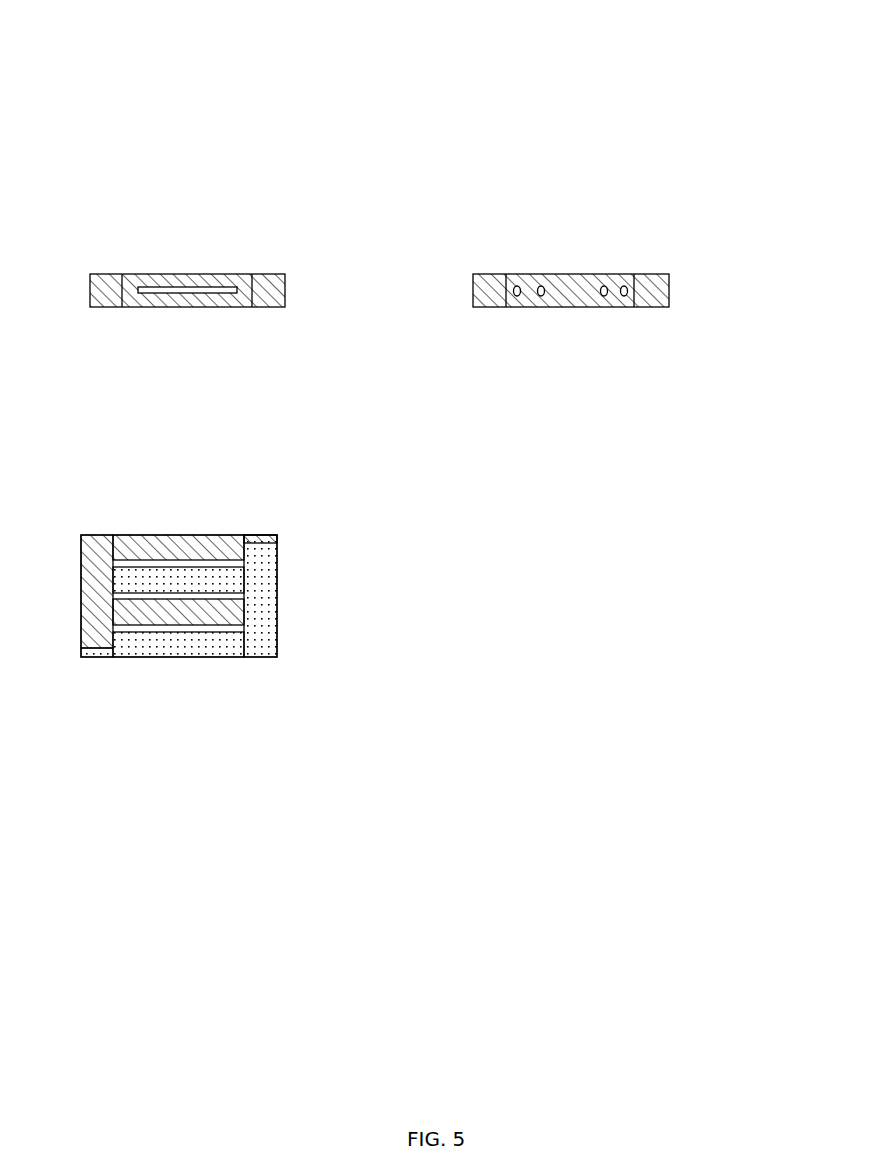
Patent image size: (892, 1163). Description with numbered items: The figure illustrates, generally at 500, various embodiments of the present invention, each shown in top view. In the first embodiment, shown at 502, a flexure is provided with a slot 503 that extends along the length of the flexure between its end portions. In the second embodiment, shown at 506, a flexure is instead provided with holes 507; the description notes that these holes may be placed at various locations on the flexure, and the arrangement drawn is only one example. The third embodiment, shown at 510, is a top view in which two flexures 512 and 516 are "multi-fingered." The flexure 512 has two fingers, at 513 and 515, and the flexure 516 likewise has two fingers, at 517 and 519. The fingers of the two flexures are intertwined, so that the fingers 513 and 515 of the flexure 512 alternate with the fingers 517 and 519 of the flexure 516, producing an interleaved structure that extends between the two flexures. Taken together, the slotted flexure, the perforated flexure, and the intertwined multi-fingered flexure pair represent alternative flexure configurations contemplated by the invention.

The various embodiments 500 is at (733, 46).
The flexure having a slot 502 is at (187, 301).
The slot 503 is at (190, 290).
The flexure having holes 506 is at (571, 298).
The holes 507 is at (624, 287).
The multi-fingered flexure embodiment 510 is at (167, 623).
The flexure 512 is at (107, 535).
The finger 513 is at (157, 542).
The finger 515 is at (148, 612).
The flexure 516 is at (260, 660).
The finger 517 is at (217, 650).
The finger 519 is at (198, 582).